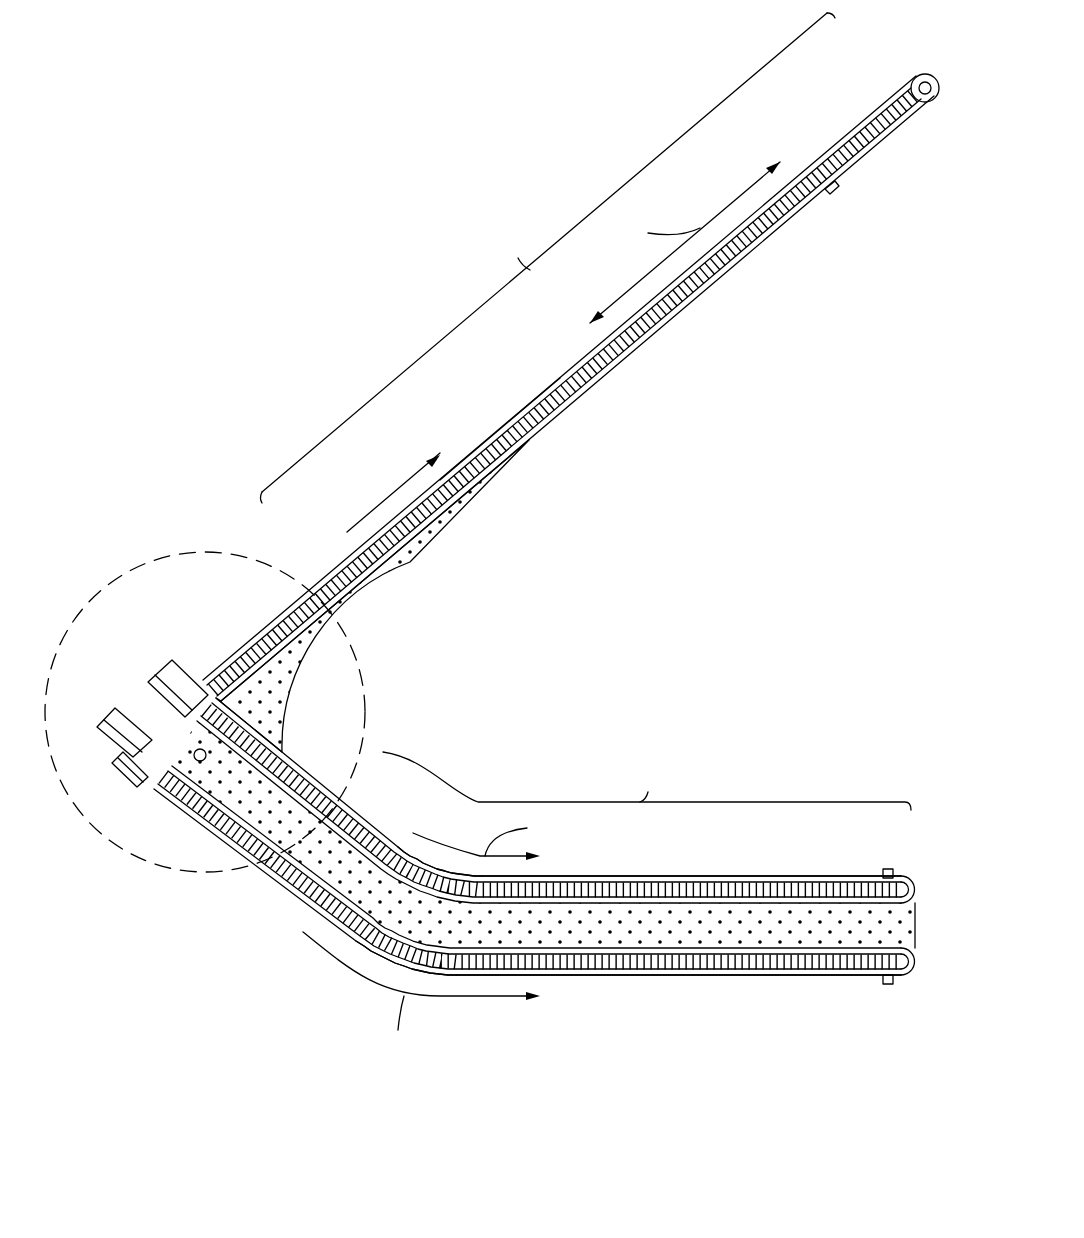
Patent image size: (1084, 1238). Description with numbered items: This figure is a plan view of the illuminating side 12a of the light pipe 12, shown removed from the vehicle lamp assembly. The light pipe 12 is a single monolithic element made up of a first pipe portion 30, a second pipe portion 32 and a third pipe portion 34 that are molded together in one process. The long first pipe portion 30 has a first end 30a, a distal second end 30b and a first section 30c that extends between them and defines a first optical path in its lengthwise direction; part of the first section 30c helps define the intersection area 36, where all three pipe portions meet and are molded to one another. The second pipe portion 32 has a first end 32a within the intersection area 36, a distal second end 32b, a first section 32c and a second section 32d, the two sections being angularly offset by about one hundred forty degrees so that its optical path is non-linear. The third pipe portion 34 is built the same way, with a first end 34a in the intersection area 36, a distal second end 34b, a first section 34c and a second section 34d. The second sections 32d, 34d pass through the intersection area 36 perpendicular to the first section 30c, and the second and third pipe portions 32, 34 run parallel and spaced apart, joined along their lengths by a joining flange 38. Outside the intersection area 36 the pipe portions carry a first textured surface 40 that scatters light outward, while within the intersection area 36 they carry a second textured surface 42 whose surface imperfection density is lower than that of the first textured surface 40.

The light pipe 12 is at (398, 422).
The illuminating side 12a is at (454, 525).
The first pipe portion 30 is at (530, 404).
The first end of the first pipe portion 30a is at (140, 778).
The second end of the first pipe portion 30b is at (917, 78).
The first section of the first pipe portion 30c is at (497, 468).
The second pipe portion 32 is at (742, 876).
The first end of the second pipe portion 32a is at (172, 668).
The second end of the second pipe portion 32b is at (906, 890).
The first section of the second pipe portion 32c is at (803, 880).
The second section of the second pipe portion 32d is at (372, 824).
The third pipe portion 34 is at (657, 975).
The first end of the third pipe portion 34a is at (118, 712).
The second end of the third pipe portion 34b is at (906, 963).
The first section of the third pipe portion 34c is at (752, 976).
The second section of the third pipe portion 34d is at (290, 886).
The intersection area 36 is at (378, 693).
The joining flange 38 is at (698, 912).
The first textured surface 40 is at (586, 411).
The second textured surface 42 is at (248, 815).